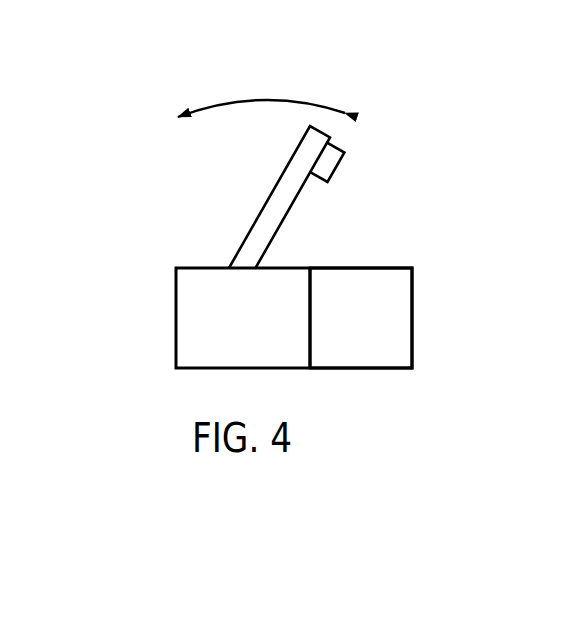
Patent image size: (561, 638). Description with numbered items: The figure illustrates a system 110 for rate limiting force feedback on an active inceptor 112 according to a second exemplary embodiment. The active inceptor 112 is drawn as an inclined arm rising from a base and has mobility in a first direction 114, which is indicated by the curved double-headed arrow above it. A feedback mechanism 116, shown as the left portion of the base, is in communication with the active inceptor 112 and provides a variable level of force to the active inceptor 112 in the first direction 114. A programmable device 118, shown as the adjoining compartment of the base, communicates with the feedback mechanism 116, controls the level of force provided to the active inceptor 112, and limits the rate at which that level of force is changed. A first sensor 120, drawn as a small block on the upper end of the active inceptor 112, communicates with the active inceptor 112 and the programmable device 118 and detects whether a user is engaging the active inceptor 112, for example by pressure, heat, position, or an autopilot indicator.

The system 110 is at (474, 100).
The active inceptor 112 is at (260, 205).
The first direction 114 is at (267, 99).
The feedback mechanism 116 is at (176, 333).
The programmable device 118 is at (365, 268).
The first sensor 120 is at (340, 168).